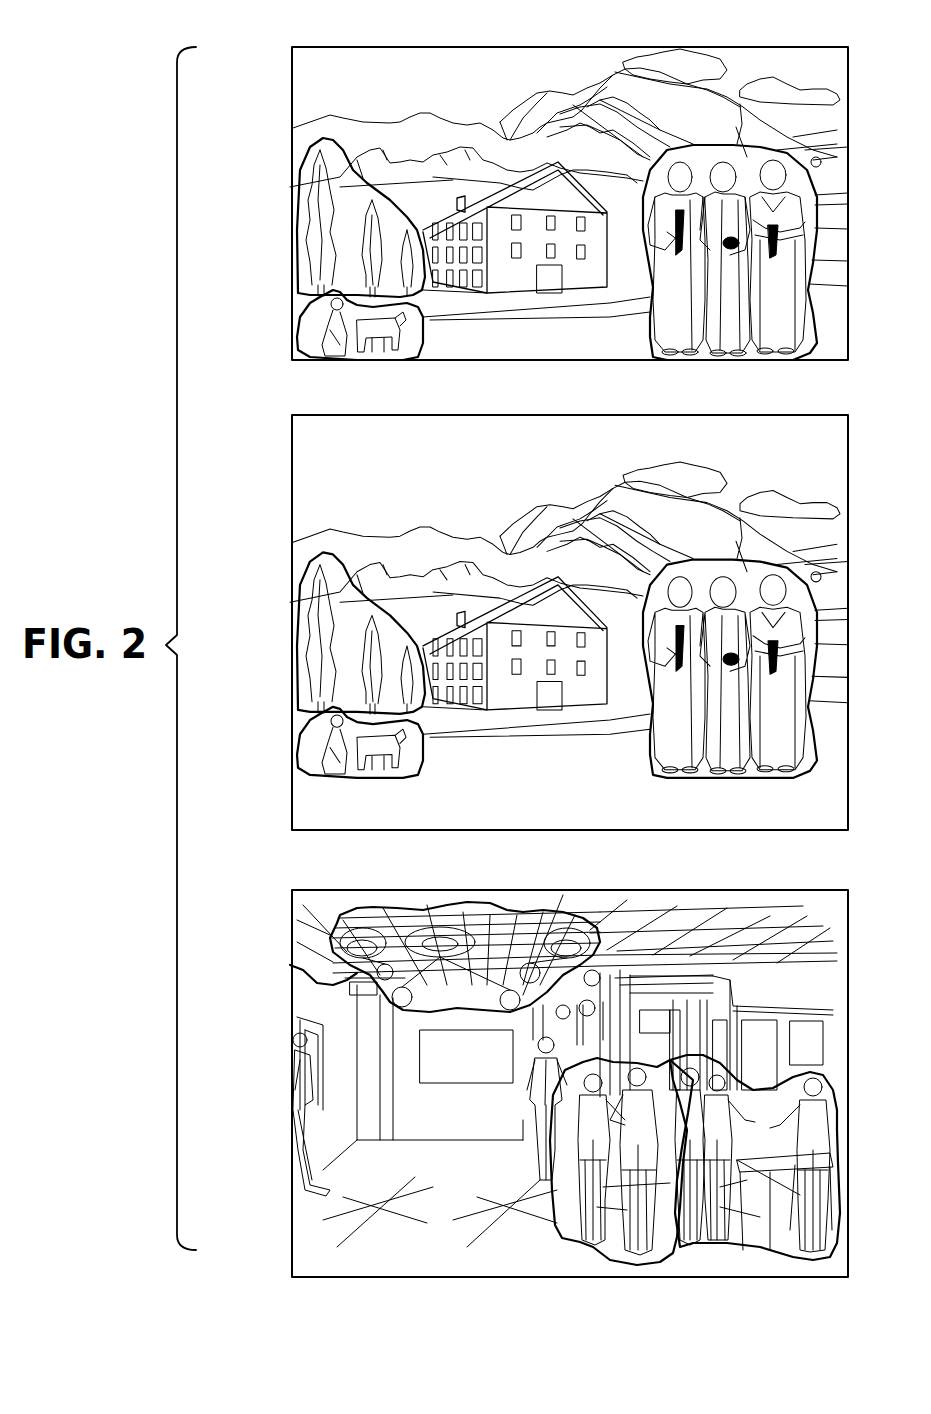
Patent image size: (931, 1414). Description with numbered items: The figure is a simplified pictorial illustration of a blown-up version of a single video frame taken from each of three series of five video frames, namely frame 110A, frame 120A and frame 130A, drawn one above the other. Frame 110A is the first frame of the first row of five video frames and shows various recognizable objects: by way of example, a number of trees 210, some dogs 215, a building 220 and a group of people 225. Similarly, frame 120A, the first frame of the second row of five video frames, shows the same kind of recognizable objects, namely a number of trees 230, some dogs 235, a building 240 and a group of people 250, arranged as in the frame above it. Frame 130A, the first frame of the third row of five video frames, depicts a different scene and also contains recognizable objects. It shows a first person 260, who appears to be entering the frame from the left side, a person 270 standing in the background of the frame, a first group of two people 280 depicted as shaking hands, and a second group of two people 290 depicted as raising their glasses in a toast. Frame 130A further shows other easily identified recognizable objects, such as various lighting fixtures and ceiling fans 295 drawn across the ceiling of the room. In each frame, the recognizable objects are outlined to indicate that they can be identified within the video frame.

The frame 110A is at (480, 47).
The frame 120A is at (480, 415).
The frame 130A is at (480, 890).
The trees 210 is at (292, 246).
The dogs 215 is at (293, 333).
The building 220 is at (544, 293).
The group of people 225 is at (652, 330).
The trees 230 is at (296, 556).
The dogs 235 is at (296, 742).
The building 240 is at (544, 711).
The group of people 250 is at (651, 752).
The first person 260 is at (308, 1183).
The person 270 is at (525, 1088).
The first group of two people 280 is at (593, 1242).
The second group of two people 290 is at (750, 1248).
The lighting fixtures and ceiling fans 295 is at (327, 950).